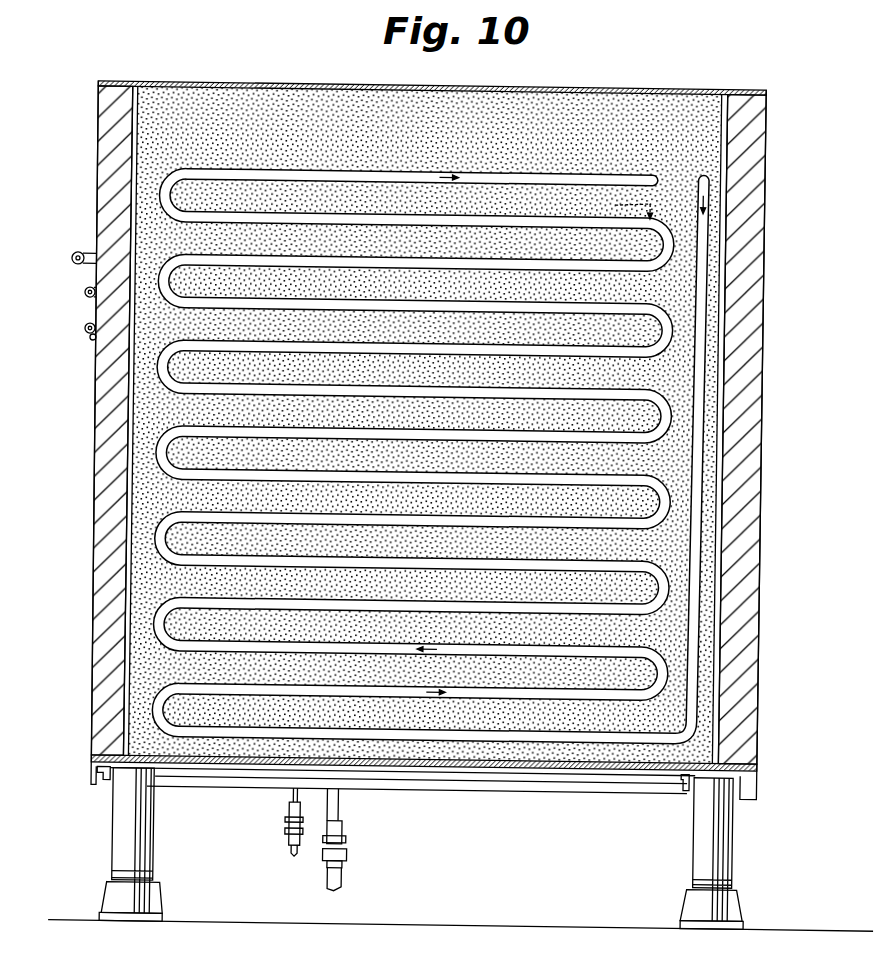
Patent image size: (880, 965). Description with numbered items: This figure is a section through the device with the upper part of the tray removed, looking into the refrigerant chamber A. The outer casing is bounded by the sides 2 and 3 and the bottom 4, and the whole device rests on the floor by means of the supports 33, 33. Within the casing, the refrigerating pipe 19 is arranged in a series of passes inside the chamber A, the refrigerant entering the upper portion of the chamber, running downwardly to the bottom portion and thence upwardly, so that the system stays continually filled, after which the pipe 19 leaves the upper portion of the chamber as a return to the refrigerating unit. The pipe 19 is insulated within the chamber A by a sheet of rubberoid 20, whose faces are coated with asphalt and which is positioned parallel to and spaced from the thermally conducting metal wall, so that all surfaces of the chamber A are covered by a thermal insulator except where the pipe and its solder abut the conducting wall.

The side 2 is at (766, 507).
The side 3 is at (98, 477).
The bottom 4 is at (500, 789).
The refrigerating pipe 19 is at (340, 813).
The sheet of rubberoid 20 is at (255, 102).
The supports 33 is at (141, 844).
The refrigerant chamber A is at (599, 127).